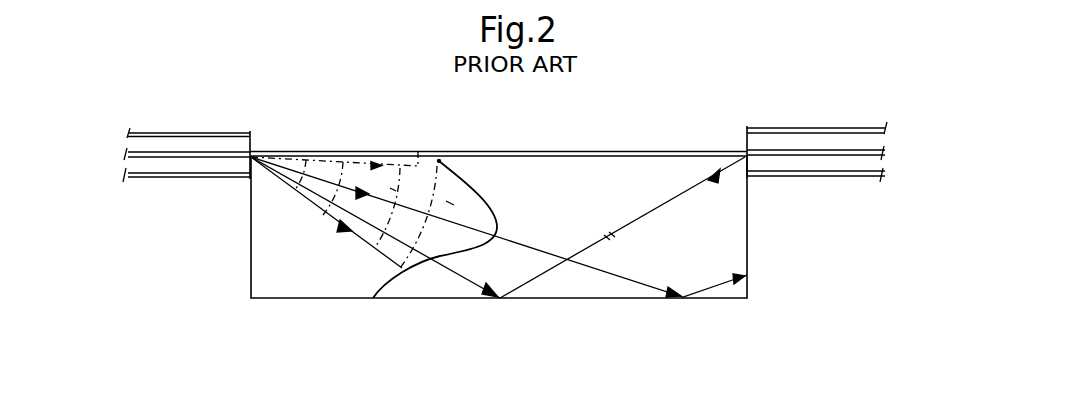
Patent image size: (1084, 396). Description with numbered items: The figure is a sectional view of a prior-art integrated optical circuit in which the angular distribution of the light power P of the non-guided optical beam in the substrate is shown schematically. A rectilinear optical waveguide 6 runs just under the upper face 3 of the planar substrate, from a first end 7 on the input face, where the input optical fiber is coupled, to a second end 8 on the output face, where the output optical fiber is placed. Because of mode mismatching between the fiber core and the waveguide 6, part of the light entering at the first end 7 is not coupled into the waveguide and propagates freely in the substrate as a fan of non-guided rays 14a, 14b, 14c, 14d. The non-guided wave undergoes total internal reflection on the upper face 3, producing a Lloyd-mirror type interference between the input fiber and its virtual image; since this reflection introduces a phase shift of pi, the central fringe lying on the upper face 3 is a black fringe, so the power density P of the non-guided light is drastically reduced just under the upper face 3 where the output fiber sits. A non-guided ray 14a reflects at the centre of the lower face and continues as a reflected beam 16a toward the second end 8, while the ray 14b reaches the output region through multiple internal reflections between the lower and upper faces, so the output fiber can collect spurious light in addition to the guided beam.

The upper face 3 is at (562, 150).
The optical waveguide 6 is at (650, 152).
The first end of the waveguide 7 is at (252, 153).
The second end of the waveguide 8 is at (747, 152).
The non-guided beam 14a is at (456, 279).
The non-guided optical beam 14b is at (653, 292).
The light ray 14c is at (376, 270).
The light ray 14d is at (418, 151).
The reflected light ray 16a is at (704, 183).
The power distribution curve P is at (480, 188).